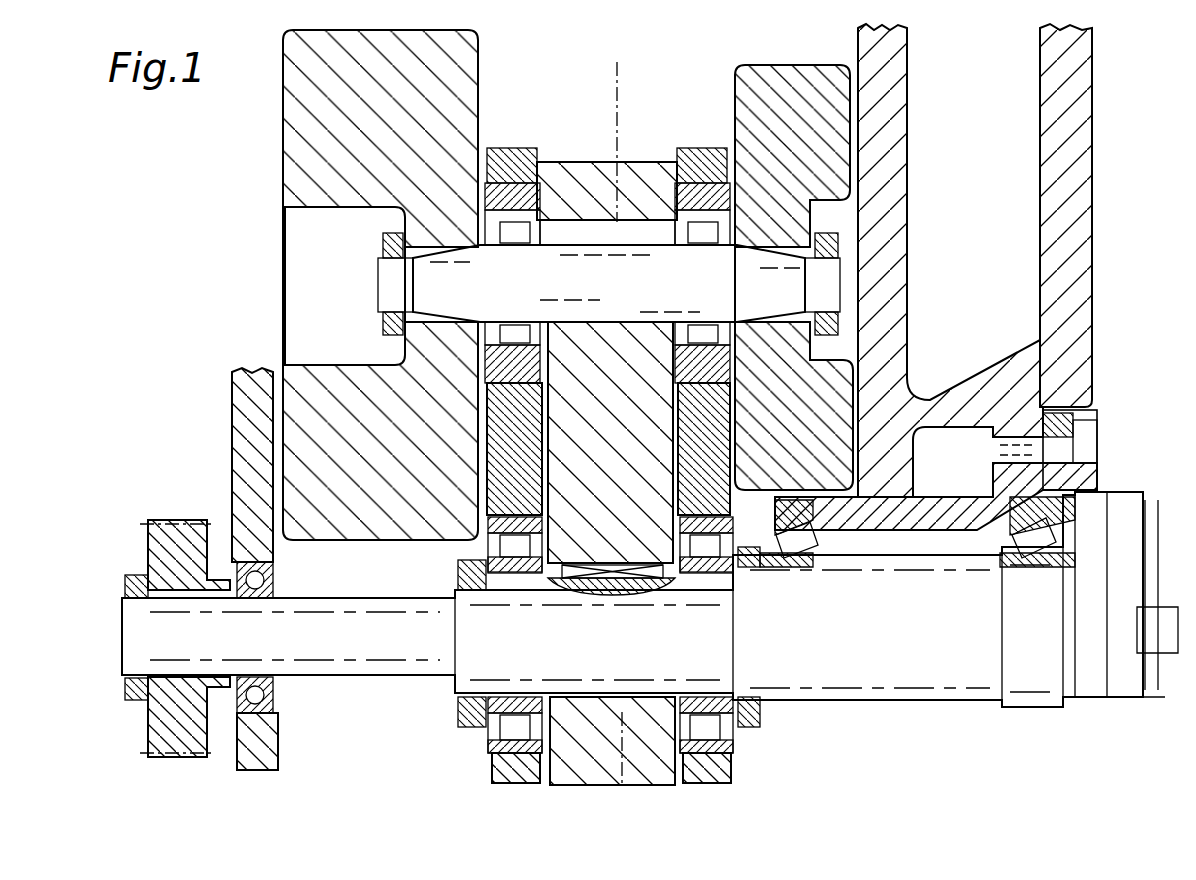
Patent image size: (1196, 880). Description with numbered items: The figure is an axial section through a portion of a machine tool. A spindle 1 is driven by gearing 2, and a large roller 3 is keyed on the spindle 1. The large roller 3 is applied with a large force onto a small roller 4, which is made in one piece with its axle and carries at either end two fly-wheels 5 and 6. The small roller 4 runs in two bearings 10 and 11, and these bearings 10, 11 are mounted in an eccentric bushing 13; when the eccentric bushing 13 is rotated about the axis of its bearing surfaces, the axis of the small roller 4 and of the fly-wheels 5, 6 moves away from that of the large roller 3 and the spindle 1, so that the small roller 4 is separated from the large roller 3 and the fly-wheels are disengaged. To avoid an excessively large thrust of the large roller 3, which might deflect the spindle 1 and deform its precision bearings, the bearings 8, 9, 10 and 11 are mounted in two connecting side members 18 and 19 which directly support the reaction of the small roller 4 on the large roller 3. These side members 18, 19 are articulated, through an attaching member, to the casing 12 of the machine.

The spindle 1 is at (132, 626).
The gearing 2 is at (152, 552).
The large roller 3 is at (580, 752).
The small roller 4 is at (598, 255).
The fly-wheel 5 is at (472, 60).
The fly-wheel 6 is at (752, 78).
The bearing 8 is at (510, 732).
The bearing 9 is at (715, 728).
The bearing 10 is at (546, 185).
The bearing 11 is at (705, 225).
The casing 12 is at (1088, 198).
The eccentric bushing 13 is at (628, 180).
The connecting side member 18 is at (515, 478).
The connecting side member 19 is at (722, 498).